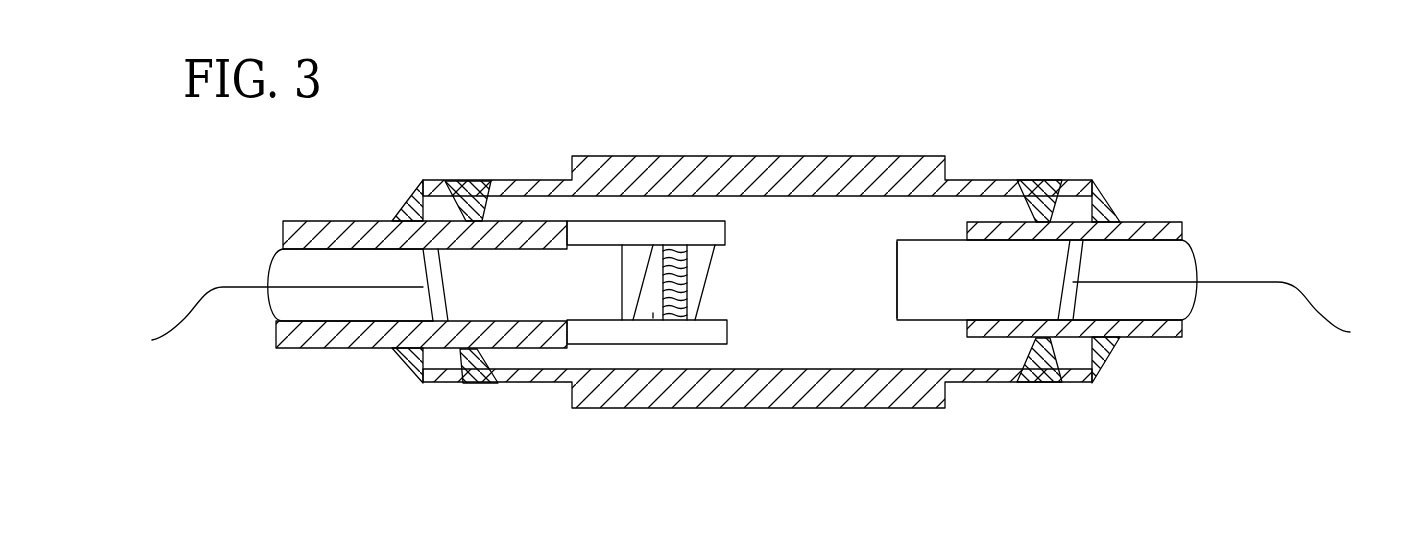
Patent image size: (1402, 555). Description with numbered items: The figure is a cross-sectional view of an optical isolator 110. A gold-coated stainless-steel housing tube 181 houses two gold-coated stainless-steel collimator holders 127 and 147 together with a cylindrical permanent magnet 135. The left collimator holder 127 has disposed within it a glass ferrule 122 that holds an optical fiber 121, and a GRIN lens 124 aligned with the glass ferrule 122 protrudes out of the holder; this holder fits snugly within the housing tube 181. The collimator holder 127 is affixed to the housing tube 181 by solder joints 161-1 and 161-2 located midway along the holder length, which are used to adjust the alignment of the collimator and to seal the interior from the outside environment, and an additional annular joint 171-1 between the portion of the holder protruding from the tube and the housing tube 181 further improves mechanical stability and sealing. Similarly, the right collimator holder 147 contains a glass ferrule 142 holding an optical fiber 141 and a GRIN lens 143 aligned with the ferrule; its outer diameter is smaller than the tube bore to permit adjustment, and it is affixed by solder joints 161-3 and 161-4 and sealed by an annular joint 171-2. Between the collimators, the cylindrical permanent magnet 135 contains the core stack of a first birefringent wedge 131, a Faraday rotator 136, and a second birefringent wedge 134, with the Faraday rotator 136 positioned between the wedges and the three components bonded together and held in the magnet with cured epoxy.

The optical isolator 110 is at (1085, 75).
The optical fiber 121 is at (190, 313).
The glass ferrule 122 is at (268, 272).
The GRIN lens 124 is at (550, 298).
The collimator holder 127 is at (310, 221).
The first birefringent wedge 131 is at (653, 313).
The second birefringent wedge 134 is at (703, 262).
The cylindrical permanent magnet 135 is at (725, 230).
The Faraday rotator 136 is at (680, 287).
The optical fiber 141 is at (1318, 298).
The glass ferrule 142 is at (1190, 262).
The GRIN lens 143 is at (898, 240).
The collimator holder 147 is at (1184, 229).
The solder joint 161-1 is at (475, 181).
The solder joint 161-2 is at (483, 387).
The solder joint 161-3 is at (1037, 180).
The solder joint 161-4 is at (1038, 383).
The annular joint 171-1 is at (405, 203).
The annular joint 171-2 is at (1108, 198).
The housing tube 181 is at (810, 156).